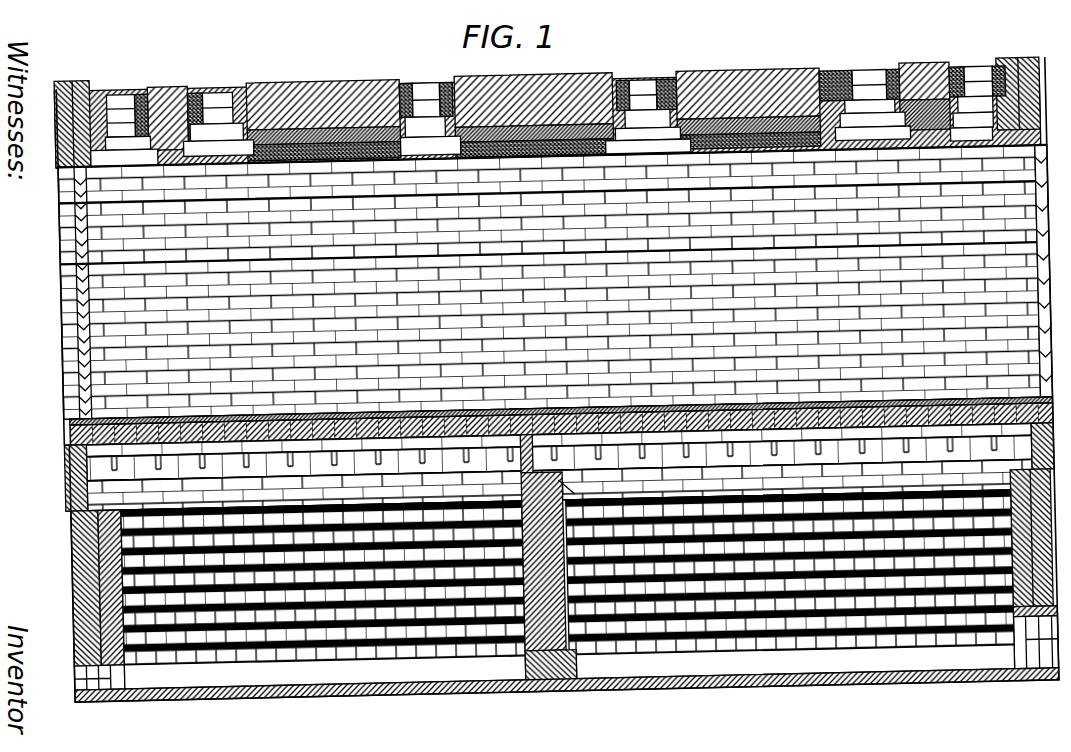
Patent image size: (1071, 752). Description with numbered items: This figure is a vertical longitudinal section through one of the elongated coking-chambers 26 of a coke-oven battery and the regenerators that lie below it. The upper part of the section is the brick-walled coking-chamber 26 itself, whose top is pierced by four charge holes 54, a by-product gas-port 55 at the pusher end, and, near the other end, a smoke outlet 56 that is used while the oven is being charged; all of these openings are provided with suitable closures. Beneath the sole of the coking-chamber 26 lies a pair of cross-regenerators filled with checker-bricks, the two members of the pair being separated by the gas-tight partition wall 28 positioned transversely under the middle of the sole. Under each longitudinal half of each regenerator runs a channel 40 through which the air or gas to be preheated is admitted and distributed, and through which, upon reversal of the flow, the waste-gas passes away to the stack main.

The coking-chamber 26 is at (150, 334).
The gas-tight partition wall 28 is at (553, 680).
The channel 40 is at (261, 679).
The charge hole 54 is at (222, 87).
The by-product gas-port 55 is at (983, 78).
The smoke outlet 56 is at (125, 87).